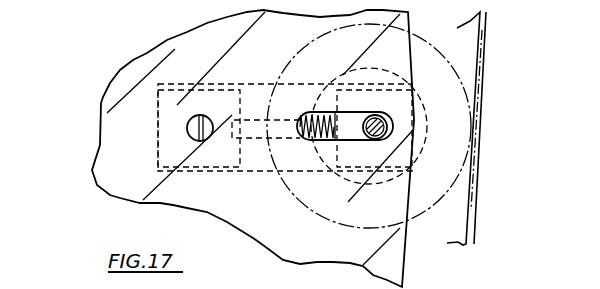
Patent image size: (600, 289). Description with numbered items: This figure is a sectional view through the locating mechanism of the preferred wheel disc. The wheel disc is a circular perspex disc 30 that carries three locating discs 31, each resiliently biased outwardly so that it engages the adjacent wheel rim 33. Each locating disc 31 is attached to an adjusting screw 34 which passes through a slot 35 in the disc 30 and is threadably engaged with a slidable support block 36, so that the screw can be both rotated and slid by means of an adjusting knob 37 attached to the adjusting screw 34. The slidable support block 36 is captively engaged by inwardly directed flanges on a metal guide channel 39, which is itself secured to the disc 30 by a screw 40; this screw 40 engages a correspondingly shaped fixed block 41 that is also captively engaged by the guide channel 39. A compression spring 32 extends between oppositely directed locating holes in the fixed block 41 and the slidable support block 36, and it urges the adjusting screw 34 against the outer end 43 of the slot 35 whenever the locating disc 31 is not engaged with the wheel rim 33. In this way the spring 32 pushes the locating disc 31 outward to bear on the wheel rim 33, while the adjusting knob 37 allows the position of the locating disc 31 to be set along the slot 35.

The circular perspex disc 30 is at (118, 125).
The locating disc 31 is at (445, 62).
The compression spring 32 is at (322, 137).
The wheel rim 33 is at (485, 88).
The adjusting screw 34 is at (377, 139).
The slot 35 is at (350, 137).
The slidable support block 36 is at (417, 38).
The adjusting knob 37 is at (428, 138).
The metal guide channel 39 is at (259, 82).
The screw 40 is at (192, 131).
The fixed block 41 is at (208, 170).
The outer end of the slot 43 is at (393, 124).